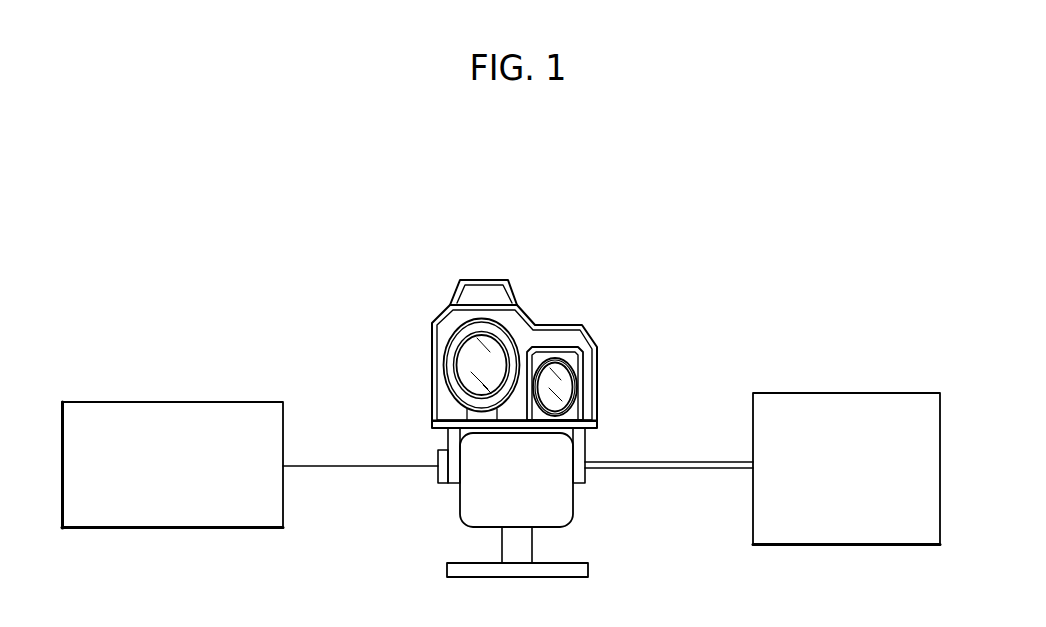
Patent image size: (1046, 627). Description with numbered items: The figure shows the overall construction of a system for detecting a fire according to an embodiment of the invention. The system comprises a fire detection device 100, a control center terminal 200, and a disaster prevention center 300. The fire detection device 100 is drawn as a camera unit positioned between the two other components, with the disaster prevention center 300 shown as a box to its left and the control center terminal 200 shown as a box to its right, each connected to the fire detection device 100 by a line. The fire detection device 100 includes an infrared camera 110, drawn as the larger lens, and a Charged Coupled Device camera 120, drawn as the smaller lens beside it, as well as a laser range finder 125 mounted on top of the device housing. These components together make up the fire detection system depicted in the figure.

The fire detection device 100 is at (509, 377).
The infrared camera 110 is at (448, 362).
The CCD camera 120 is at (572, 386).
The laser range finder 125 is at (508, 282).
The control center terminal 200 is at (843, 393).
The disaster prevention center 300 is at (170, 402).